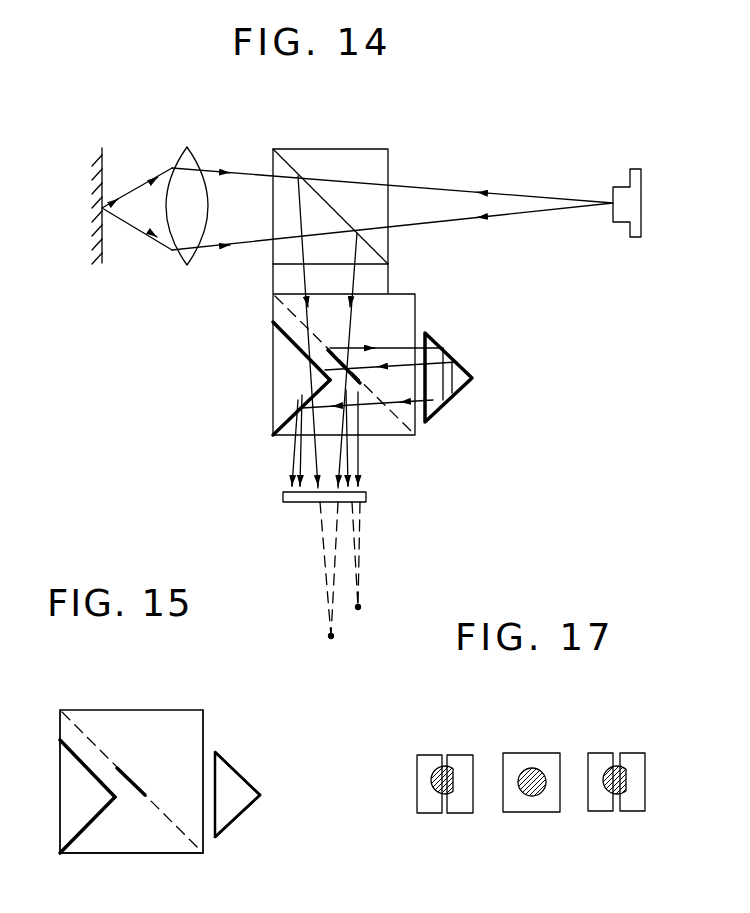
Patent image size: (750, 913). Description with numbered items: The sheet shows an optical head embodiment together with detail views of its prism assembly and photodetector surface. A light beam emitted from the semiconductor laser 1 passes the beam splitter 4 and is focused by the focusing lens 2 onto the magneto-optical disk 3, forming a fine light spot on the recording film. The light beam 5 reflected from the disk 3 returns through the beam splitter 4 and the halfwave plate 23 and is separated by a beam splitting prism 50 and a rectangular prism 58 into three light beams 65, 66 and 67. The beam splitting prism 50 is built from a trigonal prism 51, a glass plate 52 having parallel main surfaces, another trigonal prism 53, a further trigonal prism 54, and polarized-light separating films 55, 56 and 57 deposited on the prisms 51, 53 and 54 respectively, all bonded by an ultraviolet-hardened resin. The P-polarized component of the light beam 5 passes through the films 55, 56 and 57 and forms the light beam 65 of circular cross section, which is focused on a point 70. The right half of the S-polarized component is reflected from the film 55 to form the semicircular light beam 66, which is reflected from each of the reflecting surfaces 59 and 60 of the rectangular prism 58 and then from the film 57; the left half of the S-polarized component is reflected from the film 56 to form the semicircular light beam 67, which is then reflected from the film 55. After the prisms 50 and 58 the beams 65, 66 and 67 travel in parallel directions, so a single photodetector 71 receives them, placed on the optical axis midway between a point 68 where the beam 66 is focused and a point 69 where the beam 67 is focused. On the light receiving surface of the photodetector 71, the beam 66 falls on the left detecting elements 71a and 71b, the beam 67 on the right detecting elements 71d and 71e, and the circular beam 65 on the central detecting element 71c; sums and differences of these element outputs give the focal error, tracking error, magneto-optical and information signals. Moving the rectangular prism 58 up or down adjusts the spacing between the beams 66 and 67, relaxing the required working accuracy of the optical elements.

In FIG. 14, the semiconductor laser 1 is at (641, 185).
In FIG. 14, the focusing lens 2 is at (187, 147).
In FIG. 14, the magneto-optical disk 3 is at (103, 168).
In FIG. 14, the beam splitter 4 is at (388, 162).
In FIG. 14, the light beam 5 is at (355, 276).
In FIG. 14, the halfwave plate 23 is at (273, 278).
In FIG. 14, the beam splitting prism 50 is at (272, 355).
In FIG. 15, the beam splitting prism 50 is at (60, 712).
In FIG. 15, the trigonal prism 51 is at (195, 725).
In FIG. 15, the glass plate 52 is at (187, 845).
In FIG. 15, the trigonal prism 53 is at (68, 807).
In FIG. 15, the trigonal prism 54 is at (132, 843).
In FIG. 15, the polarized-light separating film 55 is at (132, 765).
In FIG. 15, the polarized-light separating film 56 is at (78, 760).
In FIG. 15, the polarized-light separating film 57 is at (85, 833).
In FIG. 14, the rectangular prism 58 is at (467, 357).
In FIG. 15, the rectangular prism 58 is at (252, 793).
In FIG. 15, the reflecting surface 59 is at (235, 767).
In FIG. 15, the reflecting surface 60 is at (237, 818).
In FIG. 14, the light beam 65 is at (332, 457).
In FIG. 17, the light beam 65 is at (530, 768).
In FIG. 14, the light beam 66 is at (400, 350).
In FIG. 17, the light beam 66 is at (445, 767).
In FIG. 14, the light beam 67 is at (360, 463).
In FIG. 17, the light beam 67 is at (620, 767).
In FIG. 14, the point 68 is at (330, 381).
In FIG. 14, the point 69 is at (361, 605).
In FIG. 14, the point 70 is at (330, 636).
In FIG. 14, the photodetector 71 is at (283, 497).
In FIG. 17, the detecting element 71a is at (432, 813).
In FIG. 17, the detecting element 71b is at (462, 815).
In FIG. 17, the detecting element 71c is at (523, 813).
In FIG. 17, the detecting element 71d is at (598, 813).
In FIG. 17, the detecting element 71e is at (635, 812).